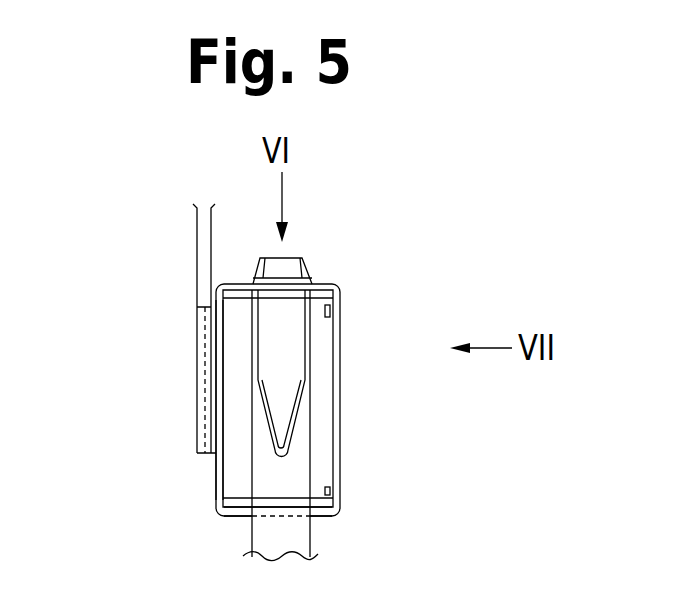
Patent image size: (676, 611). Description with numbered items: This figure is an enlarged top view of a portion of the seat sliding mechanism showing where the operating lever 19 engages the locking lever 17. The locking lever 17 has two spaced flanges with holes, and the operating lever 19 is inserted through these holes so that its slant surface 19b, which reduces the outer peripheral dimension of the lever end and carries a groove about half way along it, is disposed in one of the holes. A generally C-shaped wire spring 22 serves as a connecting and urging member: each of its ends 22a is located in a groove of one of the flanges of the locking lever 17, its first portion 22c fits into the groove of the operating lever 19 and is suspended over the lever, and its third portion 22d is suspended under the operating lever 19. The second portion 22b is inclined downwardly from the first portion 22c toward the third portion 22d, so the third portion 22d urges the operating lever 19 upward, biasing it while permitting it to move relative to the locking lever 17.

The locking lever 17 is at (197, 245).
The operating lever 19 is at (288, 450).
The slant surface 19b is at (252, 345).
The wire spring 22 is at (236, 381).
The ends of the wire spring 22a is at (333, 311).
The second portion 22b is at (222, 425).
The first portion 22c is at (287, 288).
The third portion 22d is at (222, 512).